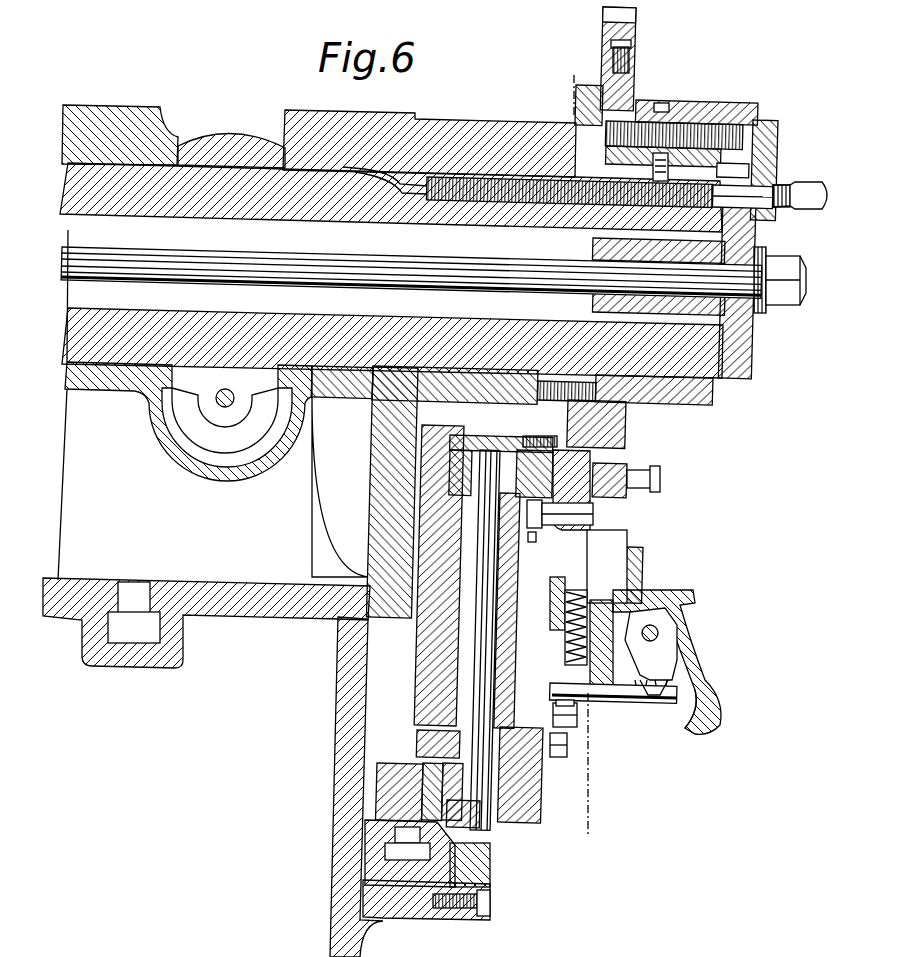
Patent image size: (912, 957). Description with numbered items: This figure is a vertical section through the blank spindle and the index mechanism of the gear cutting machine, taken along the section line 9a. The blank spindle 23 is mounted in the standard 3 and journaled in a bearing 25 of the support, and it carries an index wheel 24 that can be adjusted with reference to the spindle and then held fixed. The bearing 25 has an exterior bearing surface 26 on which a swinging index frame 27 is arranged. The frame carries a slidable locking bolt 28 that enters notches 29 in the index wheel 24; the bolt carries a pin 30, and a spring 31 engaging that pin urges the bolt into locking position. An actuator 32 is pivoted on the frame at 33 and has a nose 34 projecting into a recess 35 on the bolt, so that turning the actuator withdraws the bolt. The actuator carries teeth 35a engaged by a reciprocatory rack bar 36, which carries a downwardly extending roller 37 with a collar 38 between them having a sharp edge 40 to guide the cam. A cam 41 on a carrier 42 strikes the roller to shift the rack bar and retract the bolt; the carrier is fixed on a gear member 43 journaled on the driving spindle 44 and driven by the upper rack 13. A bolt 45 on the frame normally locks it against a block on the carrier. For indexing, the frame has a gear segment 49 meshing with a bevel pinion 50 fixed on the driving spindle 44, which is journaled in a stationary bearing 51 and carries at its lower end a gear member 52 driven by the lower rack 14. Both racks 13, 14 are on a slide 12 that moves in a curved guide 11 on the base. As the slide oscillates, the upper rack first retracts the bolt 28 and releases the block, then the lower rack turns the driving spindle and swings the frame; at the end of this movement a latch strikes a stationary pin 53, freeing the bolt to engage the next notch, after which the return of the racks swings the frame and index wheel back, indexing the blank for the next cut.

The standard 3 is at (115, 383).
The section line 9a is at (582, 460).
The curved guide 11 is at (412, 883).
The slide 12 is at (380, 867).
The rack 13 is at (423, 780).
The rack 14 is at (435, 805).
The blank spindle 23 is at (706, 362).
The index wheel 24 is at (634, 33).
The bearing 25 is at (340, 370).
The exterior bearing surface 26 is at (499, 143).
The swinging index frame 27 is at (590, 535).
The locking bolt 28 is at (607, 583).
The notches 29 is at (621, 16).
The pin 30 is at (545, 572).
The spring 31 is at (587, 672).
The actuator 32 is at (657, 653).
The pivot 33 is at (660, 630).
The nose 34 is at (618, 618).
The recess 35 is at (587, 657).
The teeth 35a is at (653, 700).
The rack bar 36 is at (647, 693).
The roller 37 is at (573, 722).
The collar 38 is at (580, 706).
The edge 40 is at (582, 712).
The cam 41 is at (563, 733).
The carrier 42 is at (430, 742).
The gear member 43 is at (540, 780).
The driving spindle 44 is at (480, 678).
The bolt 45 is at (547, 543).
The gear segment 49 is at (525, 441).
The bevel pinion 50 is at (455, 467).
The stationary bearing 51 is at (423, 541).
The gear member 52 is at (503, 823).
The stationary pin 53 is at (540, 603).